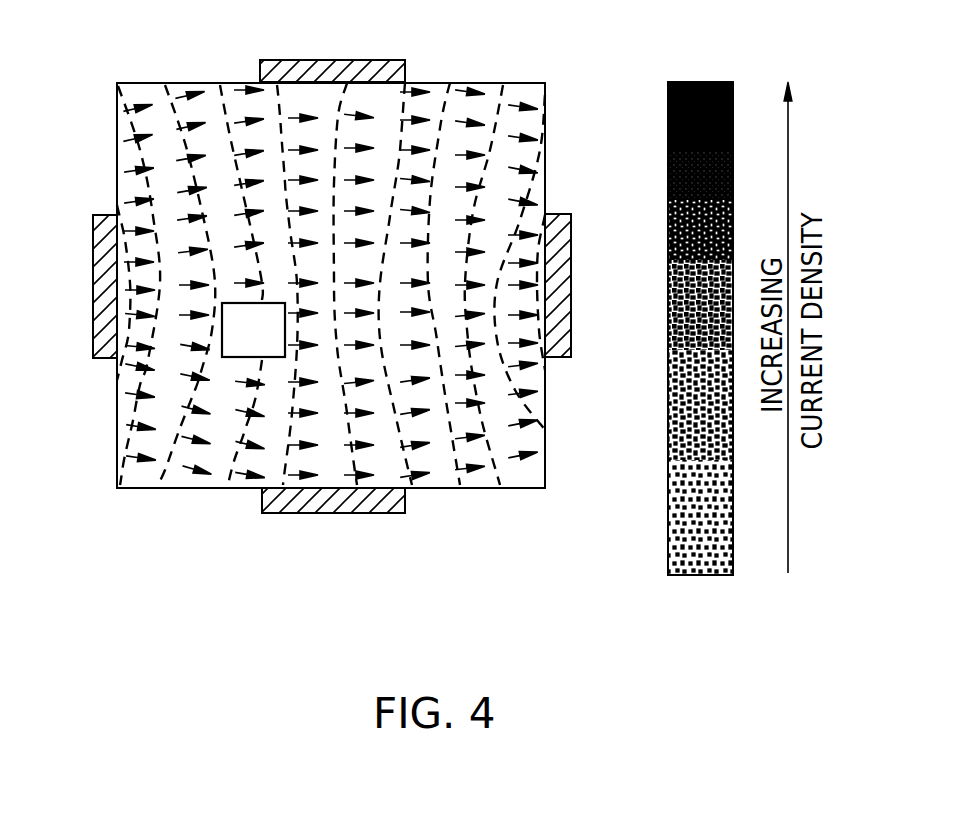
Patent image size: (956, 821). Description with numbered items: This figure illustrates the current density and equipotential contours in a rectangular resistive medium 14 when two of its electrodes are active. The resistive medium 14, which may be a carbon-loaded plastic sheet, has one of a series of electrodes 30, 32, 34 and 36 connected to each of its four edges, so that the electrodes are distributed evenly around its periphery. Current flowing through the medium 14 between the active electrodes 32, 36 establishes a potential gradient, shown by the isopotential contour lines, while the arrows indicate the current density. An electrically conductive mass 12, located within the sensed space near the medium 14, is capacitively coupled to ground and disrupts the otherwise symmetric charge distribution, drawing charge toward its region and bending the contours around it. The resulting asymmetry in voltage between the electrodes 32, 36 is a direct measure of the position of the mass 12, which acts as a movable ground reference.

The electrically conductive mass 12 is at (221, 353).
The resistive medium 14 is at (509, 92).
The electrode 30 is at (331, 60).
The electrode 32 is at (569, 250).
The electrode 34 is at (332, 513).
The electrode 36 is at (92, 250).